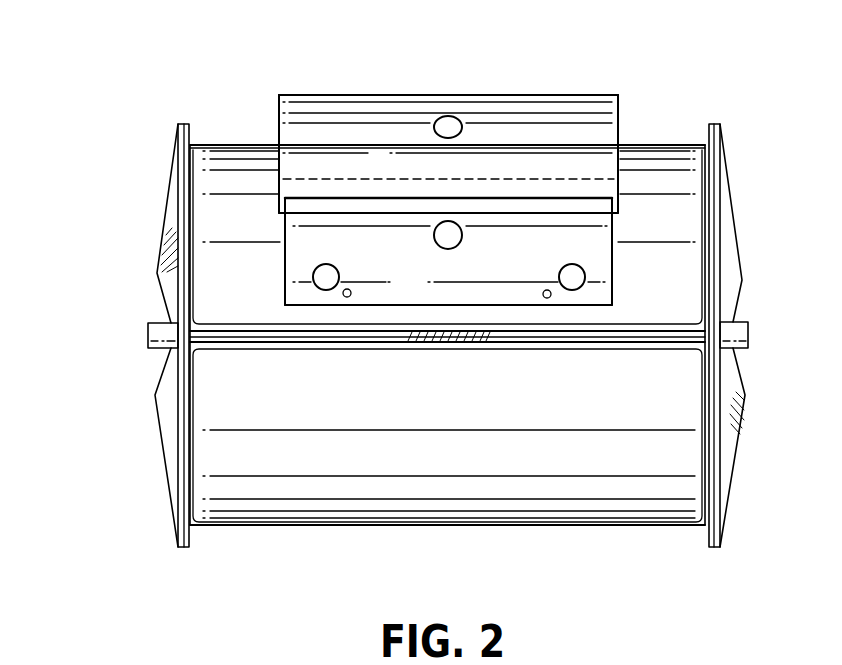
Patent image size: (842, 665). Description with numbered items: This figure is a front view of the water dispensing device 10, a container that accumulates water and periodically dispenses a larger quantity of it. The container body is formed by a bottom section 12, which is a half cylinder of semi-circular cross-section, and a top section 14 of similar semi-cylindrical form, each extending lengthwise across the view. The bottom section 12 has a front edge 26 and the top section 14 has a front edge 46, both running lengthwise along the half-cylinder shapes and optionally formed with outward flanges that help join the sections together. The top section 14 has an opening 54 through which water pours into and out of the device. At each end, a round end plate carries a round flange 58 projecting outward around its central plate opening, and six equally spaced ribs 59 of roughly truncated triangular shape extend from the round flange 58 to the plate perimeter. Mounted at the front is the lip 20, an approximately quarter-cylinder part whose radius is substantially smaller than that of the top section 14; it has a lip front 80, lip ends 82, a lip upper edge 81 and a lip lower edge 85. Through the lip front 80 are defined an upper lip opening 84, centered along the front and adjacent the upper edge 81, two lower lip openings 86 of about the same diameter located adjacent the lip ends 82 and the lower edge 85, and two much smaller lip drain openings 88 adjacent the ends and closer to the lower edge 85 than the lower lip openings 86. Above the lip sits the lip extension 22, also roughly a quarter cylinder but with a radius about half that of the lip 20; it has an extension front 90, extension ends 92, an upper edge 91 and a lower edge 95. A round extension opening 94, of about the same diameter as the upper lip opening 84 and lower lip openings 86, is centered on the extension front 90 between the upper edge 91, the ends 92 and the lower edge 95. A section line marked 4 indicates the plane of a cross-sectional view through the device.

The section line 4- 4 is at (448, 62).
The water dispensing device 10 is at (108, 202).
The bottom section 12 is at (332, 526).
The top section 14 is at (683, 145).
The lip 20 is at (449, 293).
The lip extension 22 is at (462, 129).
The front edge 26 is at (447, 367).
The front edge 46 is at (449, 336).
The opening 54 is at (182, 124).
The round flange 58 is at (148, 338).
The ribs 59 is at (165, 283).
The lip front 80 is at (503, 297).
The lip upper edge 81 is at (598, 180).
The lip ends 82 is at (285, 296).
The upper lip opening 84 is at (440, 246).
The lip lower edge 85 is at (376, 307).
The lower lip openings 86 is at (335, 272).
The lip drain openings 88 is at (347, 298).
The extension front 90 is at (553, 103).
The upper edge 91 is at (393, 95).
The extension ends 92 is at (278, 98).
The extension opening 94 is at (458, 117).
The lower edge 95 is at (302, 198).